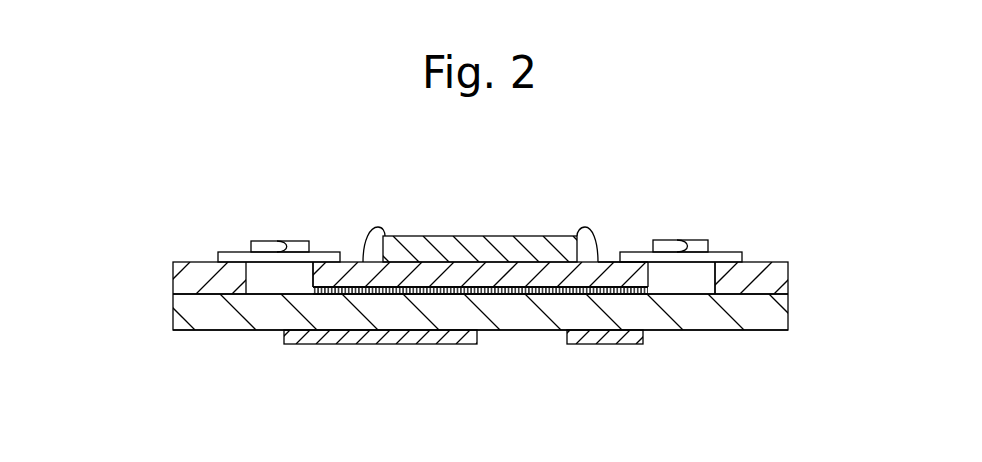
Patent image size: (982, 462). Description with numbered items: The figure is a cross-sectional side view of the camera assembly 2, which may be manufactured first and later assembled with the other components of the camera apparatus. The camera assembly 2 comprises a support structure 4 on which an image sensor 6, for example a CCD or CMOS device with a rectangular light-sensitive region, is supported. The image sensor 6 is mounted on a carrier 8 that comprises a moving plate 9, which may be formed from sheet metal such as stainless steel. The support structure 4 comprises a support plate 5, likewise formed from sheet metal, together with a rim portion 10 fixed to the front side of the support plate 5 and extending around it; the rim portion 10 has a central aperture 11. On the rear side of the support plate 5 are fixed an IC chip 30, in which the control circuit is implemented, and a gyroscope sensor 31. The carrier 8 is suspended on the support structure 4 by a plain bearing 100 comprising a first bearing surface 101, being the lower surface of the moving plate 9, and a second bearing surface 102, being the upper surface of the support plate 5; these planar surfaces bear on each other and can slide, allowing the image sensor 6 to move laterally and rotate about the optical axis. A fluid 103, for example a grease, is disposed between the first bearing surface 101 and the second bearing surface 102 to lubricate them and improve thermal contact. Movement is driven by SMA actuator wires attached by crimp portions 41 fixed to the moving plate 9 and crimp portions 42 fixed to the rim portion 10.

The camera assembly 2 is at (138, 292).
The support structure 4 is at (218, 352).
The support plate 5 is at (193, 308).
The image sensor 6 is at (473, 240).
The carrier 8 is at (333, 275).
The moving plate 9 is at (356, 268).
The rim portion 10 is at (776, 272).
The central aperture 11 is at (712, 284).
The IC chip 30 is at (385, 345).
The gyroscope sensor 31 is at (607, 344).
The crimp portions 41 is at (228, 253).
The crimp portions 42 is at (312, 246).
The plain bearing 100 is at (607, 262).
The first bearing surface 101 is at (553, 272).
The second bearing surface 102 is at (542, 296).
The fluid 103 is at (493, 295).